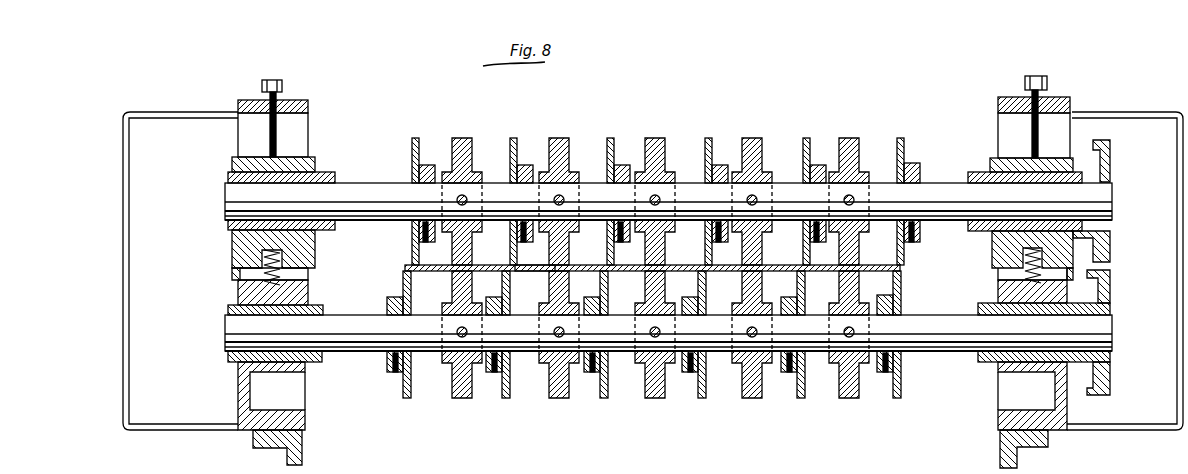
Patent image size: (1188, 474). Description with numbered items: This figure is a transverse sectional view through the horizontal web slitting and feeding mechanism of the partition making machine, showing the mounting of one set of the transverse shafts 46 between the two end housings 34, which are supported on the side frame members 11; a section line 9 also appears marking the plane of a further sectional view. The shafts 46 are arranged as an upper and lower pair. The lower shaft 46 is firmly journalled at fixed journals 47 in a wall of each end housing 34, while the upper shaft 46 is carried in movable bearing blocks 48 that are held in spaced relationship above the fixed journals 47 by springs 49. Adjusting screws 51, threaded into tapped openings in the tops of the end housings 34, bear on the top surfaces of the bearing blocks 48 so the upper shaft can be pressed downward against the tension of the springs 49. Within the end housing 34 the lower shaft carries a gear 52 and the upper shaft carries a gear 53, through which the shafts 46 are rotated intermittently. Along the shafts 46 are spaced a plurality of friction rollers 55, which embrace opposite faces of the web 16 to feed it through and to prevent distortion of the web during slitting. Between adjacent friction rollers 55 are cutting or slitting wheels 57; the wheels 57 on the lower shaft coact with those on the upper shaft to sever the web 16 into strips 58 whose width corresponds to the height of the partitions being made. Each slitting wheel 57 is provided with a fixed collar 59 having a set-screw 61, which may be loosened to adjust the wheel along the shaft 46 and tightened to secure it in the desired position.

The section line 9- 9 is at (1160, 73).
The side frame members 11 is at (288, 453).
The web 16 is at (533, 271).
The end housings 34 is at (198, 111).
The rotatable shafts 46 is at (230, 200).
The fixed journals 47 is at (238, 367).
The bearing blocks 48 is at (232, 245).
The springs 49 is at (277, 275).
The adjusting screws 51 is at (278, 140).
The gear 52 is at (1107, 376).
The gears 53 is at (1110, 248).
The friction rollers 55 is at (648, 140).
The slitting wheels 57 is at (416, 138).
The strips 58 is at (527, 266).
The fixed collar 59 is at (427, 165).
The set-screw 61 is at (423, 228).